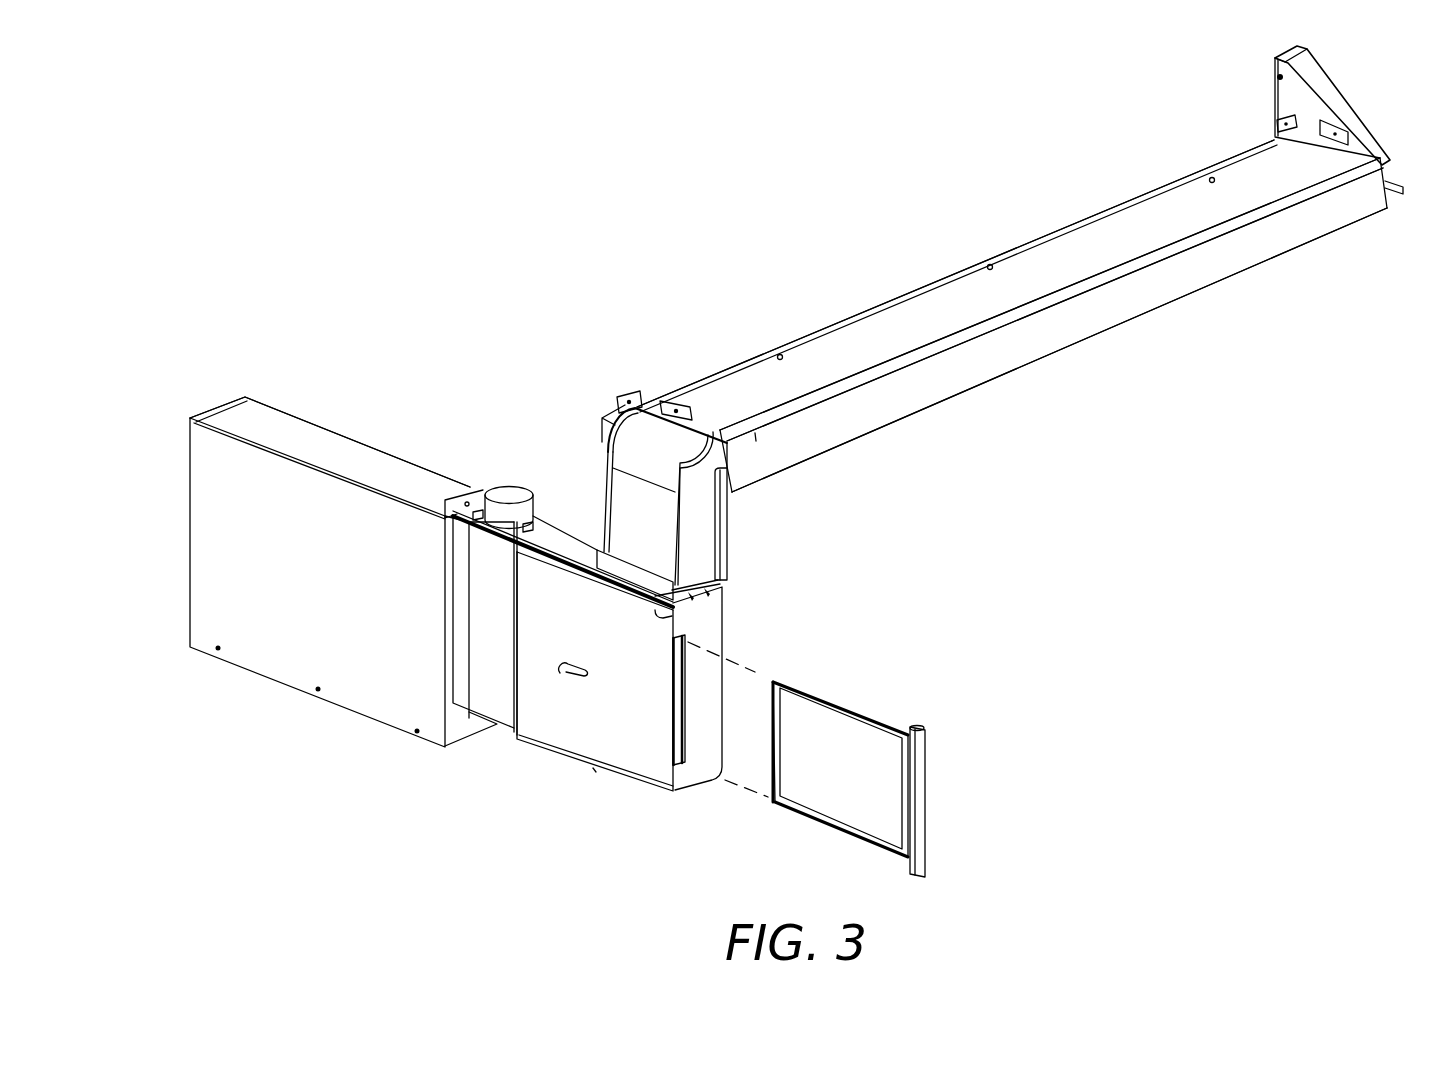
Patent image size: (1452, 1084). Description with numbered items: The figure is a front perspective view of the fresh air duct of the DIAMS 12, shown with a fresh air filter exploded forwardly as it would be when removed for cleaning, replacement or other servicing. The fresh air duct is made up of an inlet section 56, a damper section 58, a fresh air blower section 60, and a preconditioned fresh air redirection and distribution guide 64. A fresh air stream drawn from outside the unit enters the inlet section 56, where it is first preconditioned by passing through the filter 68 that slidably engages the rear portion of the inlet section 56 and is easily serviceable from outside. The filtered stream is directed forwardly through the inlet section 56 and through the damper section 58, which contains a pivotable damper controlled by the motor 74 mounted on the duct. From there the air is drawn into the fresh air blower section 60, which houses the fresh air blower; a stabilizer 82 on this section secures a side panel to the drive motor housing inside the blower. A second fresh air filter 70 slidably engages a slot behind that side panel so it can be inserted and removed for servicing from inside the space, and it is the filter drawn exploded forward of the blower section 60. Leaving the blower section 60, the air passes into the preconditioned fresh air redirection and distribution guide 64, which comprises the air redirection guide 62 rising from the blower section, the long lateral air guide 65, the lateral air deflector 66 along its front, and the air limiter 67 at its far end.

The DIAMS 12 is at (562, 192).
The fresh air inlet section 56 is at (271, 686).
The damper section 58 is at (494, 746).
The fresh air blower section 60 is at (608, 792).
The air redirection guide 62 is at (693, 523).
The preconditioned fresh air redirection and distribution guide 64 is at (1020, 230).
The lateral air guide 65 is at (875, 322).
The lateral air deflector 66 is at (1022, 340).
The air limiter 67 is at (1303, 95).
The filter 68 is at (220, 410).
The second fresh air filter 70 is at (847, 710).
The motor 74 is at (512, 488).
The stabilizer 82 is at (562, 676).